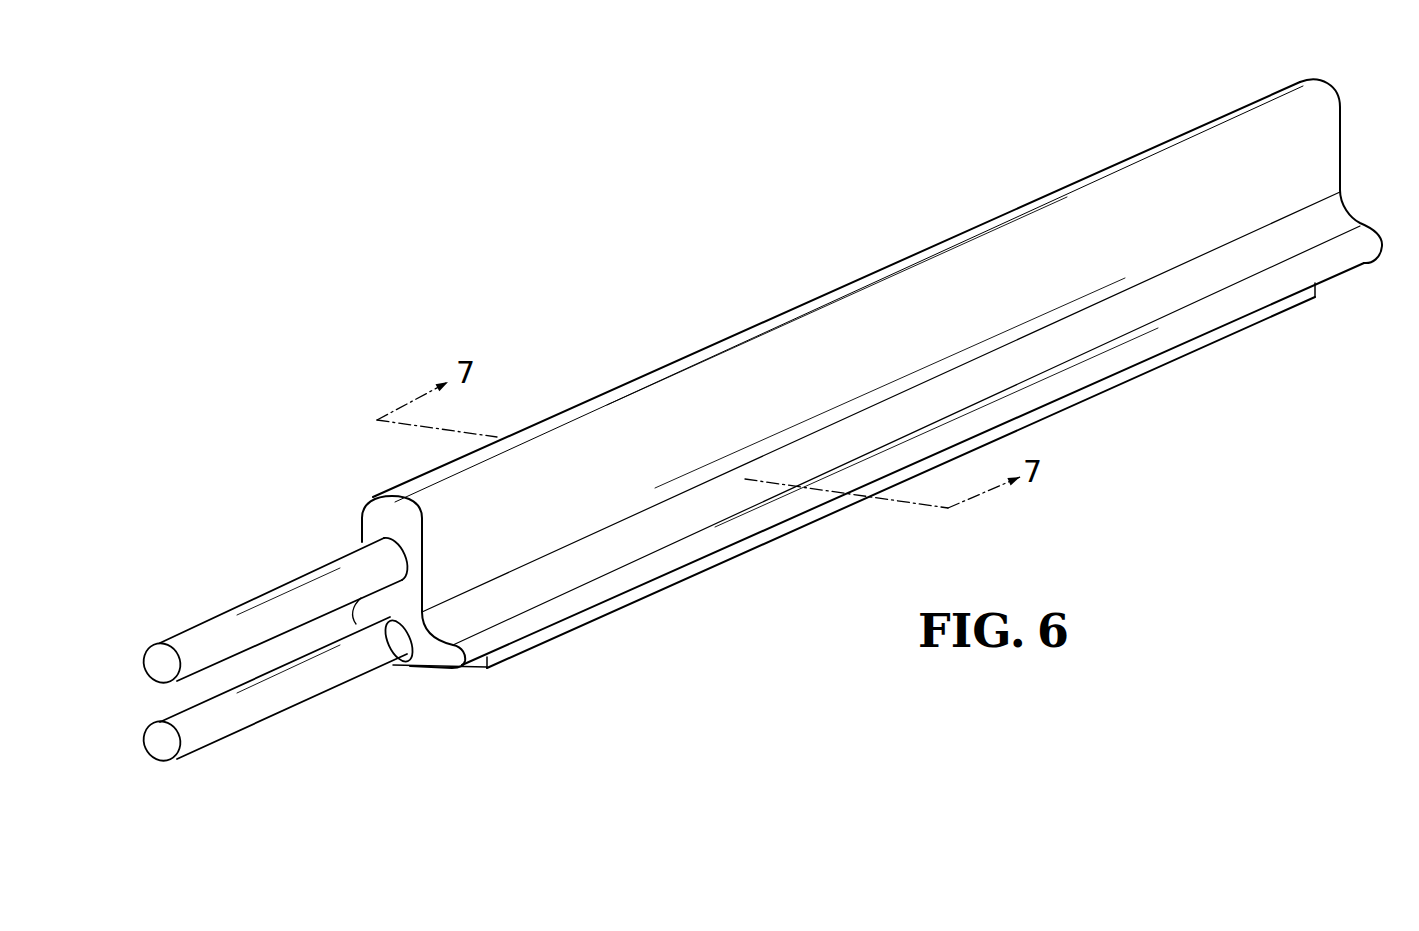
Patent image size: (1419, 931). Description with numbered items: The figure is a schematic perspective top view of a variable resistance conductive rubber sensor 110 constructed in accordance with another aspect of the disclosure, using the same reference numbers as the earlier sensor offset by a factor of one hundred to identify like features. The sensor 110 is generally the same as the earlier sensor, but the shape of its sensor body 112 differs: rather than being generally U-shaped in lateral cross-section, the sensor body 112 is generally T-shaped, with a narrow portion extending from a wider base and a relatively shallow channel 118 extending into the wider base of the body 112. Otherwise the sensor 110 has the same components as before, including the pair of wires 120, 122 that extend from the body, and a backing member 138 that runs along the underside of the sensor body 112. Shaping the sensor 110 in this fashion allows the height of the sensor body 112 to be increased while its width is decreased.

The sensor 110 is at (1027, 100).
The sensor body 112 is at (794, 360).
The channel 118 is at (393, 655).
The wire 120 is at (247, 720).
The wire 122 is at (213, 611).
The backing member 138 is at (1045, 415).